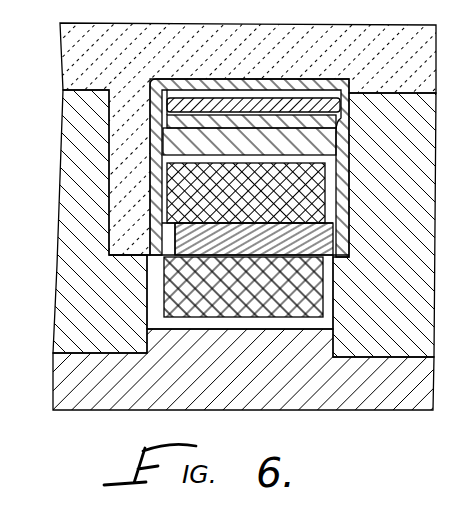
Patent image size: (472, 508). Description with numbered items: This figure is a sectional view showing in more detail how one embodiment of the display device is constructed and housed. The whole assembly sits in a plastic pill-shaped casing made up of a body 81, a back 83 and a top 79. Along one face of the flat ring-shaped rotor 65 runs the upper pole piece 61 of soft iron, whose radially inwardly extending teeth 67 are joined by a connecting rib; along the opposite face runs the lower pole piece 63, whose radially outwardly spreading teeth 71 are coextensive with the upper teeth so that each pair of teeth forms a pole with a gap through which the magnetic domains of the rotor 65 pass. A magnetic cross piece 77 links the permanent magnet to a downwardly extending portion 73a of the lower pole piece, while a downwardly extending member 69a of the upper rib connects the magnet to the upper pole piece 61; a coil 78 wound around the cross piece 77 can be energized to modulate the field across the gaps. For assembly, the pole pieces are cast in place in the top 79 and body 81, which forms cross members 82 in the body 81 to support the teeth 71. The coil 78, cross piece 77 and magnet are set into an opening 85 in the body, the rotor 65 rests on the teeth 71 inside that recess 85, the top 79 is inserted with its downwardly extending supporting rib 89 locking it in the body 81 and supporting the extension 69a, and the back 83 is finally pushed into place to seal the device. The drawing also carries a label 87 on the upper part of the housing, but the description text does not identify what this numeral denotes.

The upper pole piece 61 is at (253, 72).
The lower pole piece 63 is at (356, 205).
The rotor 65 is at (341, 105).
The teeth 67 is at (217, 80).
The downwardly extending member 69a is at (157, 170).
The teeth 71 is at (258, 121).
The downwardly extending portion 73a is at (356, 176).
The cross piece 77 is at (326, 242).
The coil 78 is at (318, 293).
The top 79 is at (319, 32).
The body 81 is at (68, 308).
The cross members 82 is at (170, 137).
The back 83 is at (356, 404).
The opening 85 is at (170, 228).
The cup 87 is at (185, 80).
The supporting rib 89 is at (112, 210).